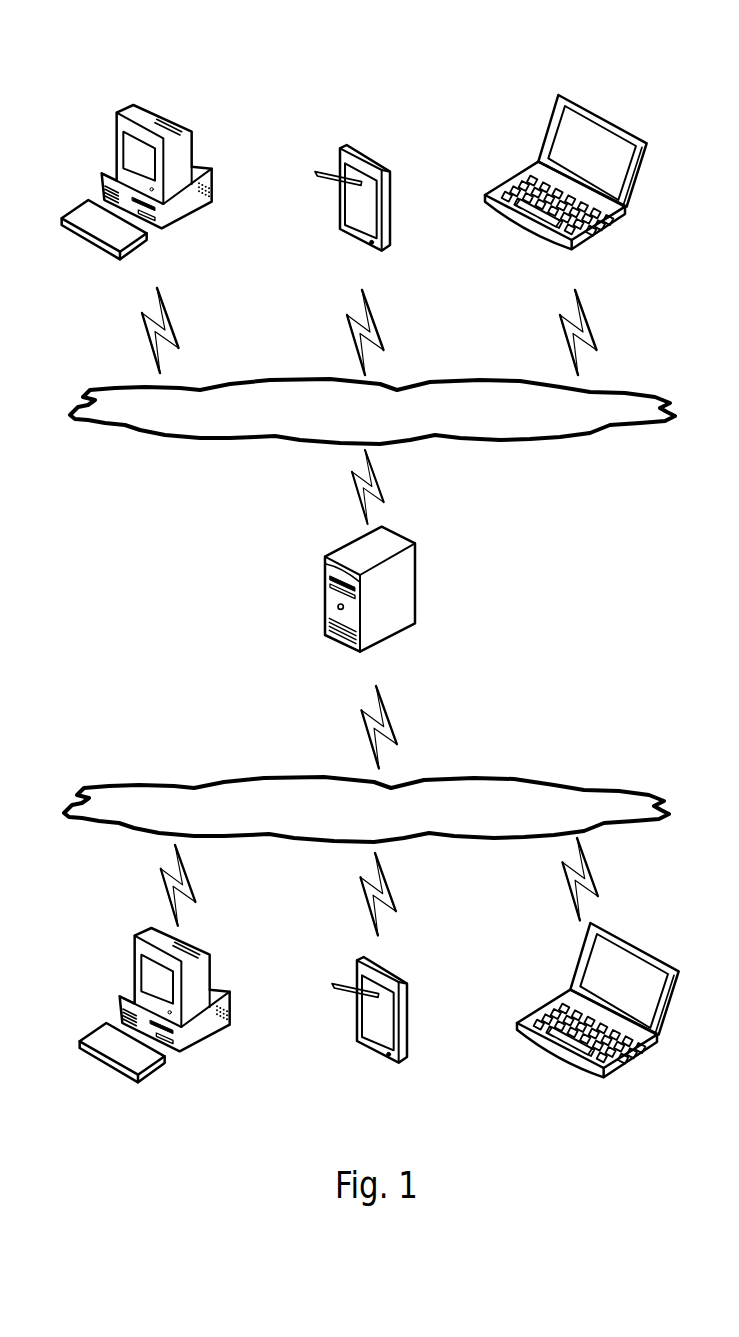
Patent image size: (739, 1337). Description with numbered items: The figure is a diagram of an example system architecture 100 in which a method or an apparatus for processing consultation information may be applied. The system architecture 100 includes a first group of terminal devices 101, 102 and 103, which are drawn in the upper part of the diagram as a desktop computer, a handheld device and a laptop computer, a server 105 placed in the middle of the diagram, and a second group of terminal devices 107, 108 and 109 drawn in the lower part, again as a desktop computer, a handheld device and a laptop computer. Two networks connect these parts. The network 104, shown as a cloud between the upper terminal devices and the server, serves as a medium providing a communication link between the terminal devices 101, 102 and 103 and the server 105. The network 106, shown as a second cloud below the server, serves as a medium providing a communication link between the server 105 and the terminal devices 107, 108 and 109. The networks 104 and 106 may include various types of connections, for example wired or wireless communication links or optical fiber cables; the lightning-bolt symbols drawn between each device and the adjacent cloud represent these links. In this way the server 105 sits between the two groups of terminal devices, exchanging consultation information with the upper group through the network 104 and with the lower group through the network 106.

The system architecture 100 is at (591, 37).
The terminal device 101 is at (137, 201).
The terminal device 102 is at (352, 219).
The terminal device 103 is at (566, 193).
The network 104 is at (372, 411).
The server 105 is at (370, 606).
The network 106 is at (366, 809).
The terminal device 107 is at (155, 1025).
The terminal device 108 is at (369, 1030).
The terminal device 109 is at (598, 1023).